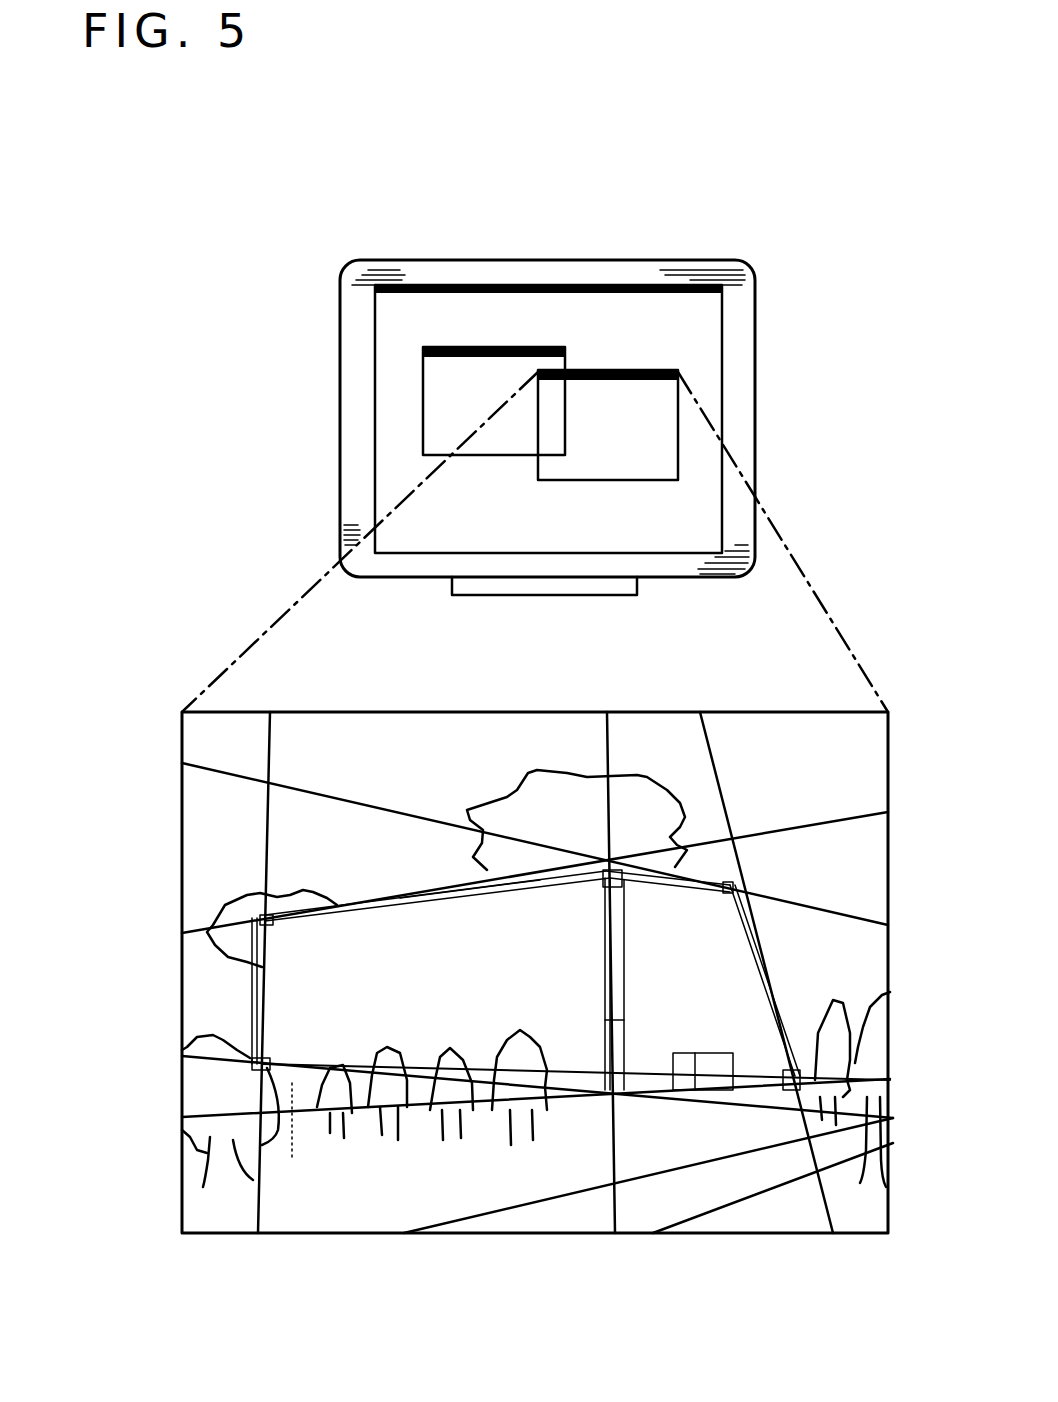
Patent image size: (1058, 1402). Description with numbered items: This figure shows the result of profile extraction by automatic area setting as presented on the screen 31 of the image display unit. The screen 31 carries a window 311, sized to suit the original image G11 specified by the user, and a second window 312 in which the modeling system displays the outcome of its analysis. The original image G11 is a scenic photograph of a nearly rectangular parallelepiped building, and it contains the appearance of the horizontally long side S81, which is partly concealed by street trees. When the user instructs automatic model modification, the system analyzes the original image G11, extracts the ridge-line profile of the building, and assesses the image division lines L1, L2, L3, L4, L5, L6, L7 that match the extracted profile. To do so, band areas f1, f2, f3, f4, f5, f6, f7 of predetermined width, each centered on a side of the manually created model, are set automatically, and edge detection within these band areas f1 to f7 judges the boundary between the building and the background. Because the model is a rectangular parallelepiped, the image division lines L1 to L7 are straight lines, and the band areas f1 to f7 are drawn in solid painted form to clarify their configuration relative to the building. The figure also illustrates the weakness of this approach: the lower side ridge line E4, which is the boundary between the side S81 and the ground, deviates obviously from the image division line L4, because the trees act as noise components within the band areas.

The screen 31 is at (722, 392).
The window 311 is at (485, 347).
The window 312 is at (615, 372).
The original image G11 is at (687, 712).
The side S81 is at (408, 997).
The image division line L1 is at (273, 753).
The image division line L2 is at (843, 825).
The image division line L3 is at (607, 750).
The image division line L4 is at (753, 1110).
The image division line L5 is at (797, 898).
The image division line L6 is at (717, 777).
The image division line L7 is at (421, 1105).
The lower side ridge line E4 is at (297, 1167).
The band area f1 is at (272, 988).
The band area f2 is at (542, 890).
The band area f3 is at (623, 1020).
The band area f4 is at (570, 1073).
The band area f5 is at (640, 885).
The band area f6 is at (770, 970).
The band area f7 is at (752, 1067).